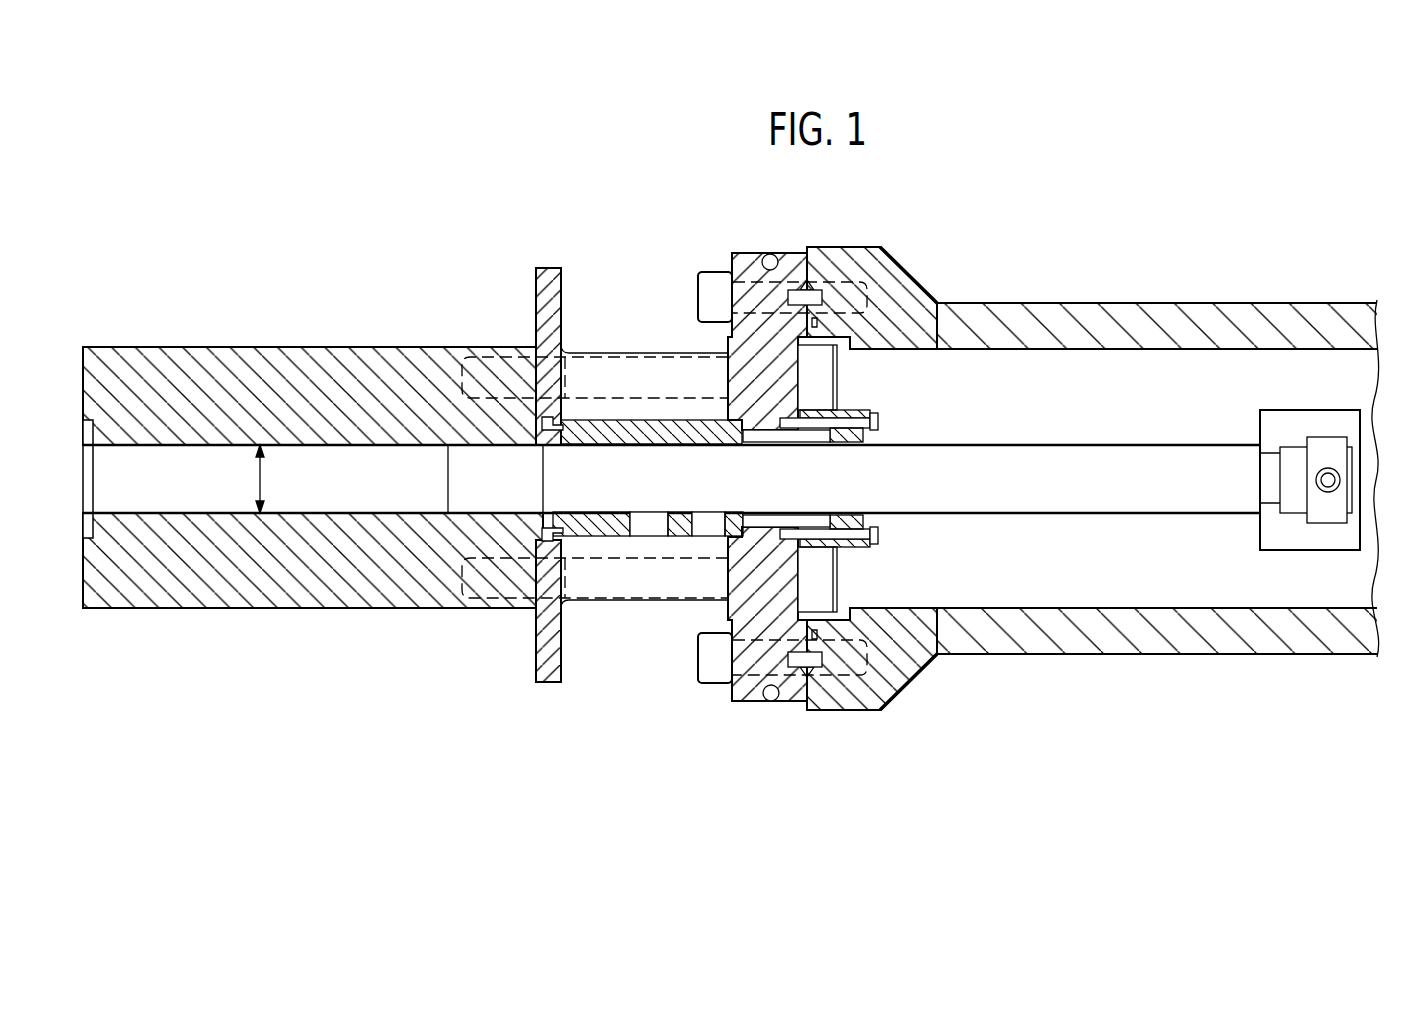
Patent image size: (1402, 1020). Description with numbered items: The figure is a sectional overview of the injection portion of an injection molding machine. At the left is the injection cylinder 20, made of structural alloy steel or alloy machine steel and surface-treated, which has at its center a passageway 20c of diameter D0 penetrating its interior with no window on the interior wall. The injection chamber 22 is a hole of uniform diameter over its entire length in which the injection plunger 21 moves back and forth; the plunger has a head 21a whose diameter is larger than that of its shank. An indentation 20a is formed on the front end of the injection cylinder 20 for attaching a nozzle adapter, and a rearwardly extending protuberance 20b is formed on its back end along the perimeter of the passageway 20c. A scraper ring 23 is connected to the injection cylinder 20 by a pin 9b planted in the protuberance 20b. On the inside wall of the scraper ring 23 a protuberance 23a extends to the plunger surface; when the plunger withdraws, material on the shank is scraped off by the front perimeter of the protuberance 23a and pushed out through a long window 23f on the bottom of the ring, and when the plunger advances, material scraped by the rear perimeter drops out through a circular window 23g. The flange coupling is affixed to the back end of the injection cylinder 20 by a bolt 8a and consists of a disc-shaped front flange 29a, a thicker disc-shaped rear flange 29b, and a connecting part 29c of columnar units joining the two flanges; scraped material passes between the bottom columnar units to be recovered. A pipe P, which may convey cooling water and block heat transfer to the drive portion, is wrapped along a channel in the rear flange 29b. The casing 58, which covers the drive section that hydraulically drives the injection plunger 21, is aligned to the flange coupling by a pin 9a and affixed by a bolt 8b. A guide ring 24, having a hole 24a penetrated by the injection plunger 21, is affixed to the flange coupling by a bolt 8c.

The bolt 8a is at (915, 287).
The bolt 8b is at (720, 272).
The bolt 8c is at (878, 534).
The pin 9a is at (842, 288).
The pin 9b is at (538, 412).
The injection cylinder 20 is at (395, 605).
The indentation 20a is at (92, 475).
The protuberance 20b is at (550, 527).
The passageway 20c is at (495, 479).
The injection plunger 21 is at (1114, 452).
The head 21a is at (338, 347).
The injection chamber 22 is at (378, 561).
The scraper ring 23 is at (648, 492).
The protuberance 23a is at (672, 536).
The long window 23f is at (637, 536).
The circular window 23g is at (702, 536).
The guide ring 24 is at (826, 372).
The hole 24a is at (865, 553).
The front flange 29a is at (545, 272).
The rear flange 29b is at (748, 254).
The connecting part 29c is at (605, 350).
The casing 58 is at (1225, 303).
The pipe P is at (772, 256).
The diameter D0 is at (280, 479).